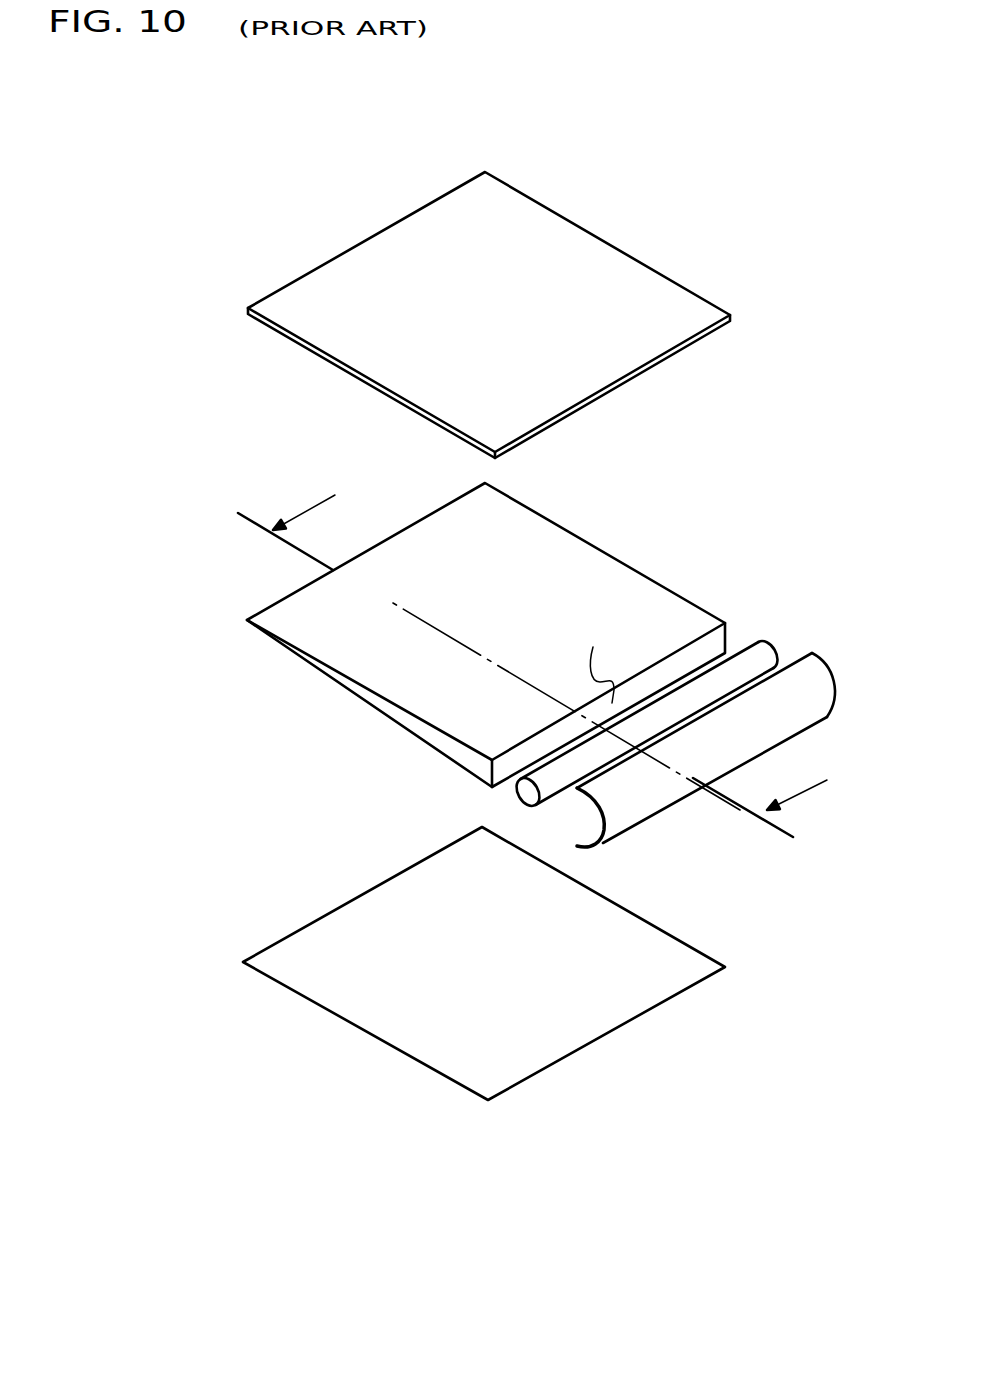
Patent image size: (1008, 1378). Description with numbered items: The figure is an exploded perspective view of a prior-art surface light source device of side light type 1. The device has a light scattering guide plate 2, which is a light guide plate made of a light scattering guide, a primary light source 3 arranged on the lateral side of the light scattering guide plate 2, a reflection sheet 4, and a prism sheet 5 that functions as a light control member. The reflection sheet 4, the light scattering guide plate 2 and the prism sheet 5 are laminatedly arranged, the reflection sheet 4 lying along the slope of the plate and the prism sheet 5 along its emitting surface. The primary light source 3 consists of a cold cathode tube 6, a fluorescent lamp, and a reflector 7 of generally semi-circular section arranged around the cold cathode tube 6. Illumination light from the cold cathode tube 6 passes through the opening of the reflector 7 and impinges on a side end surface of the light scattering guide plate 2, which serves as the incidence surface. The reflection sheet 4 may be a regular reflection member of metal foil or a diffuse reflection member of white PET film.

The surface light source device of side light type 1 is at (528, 722).
The light scattering guide plate 2 is at (287, 617).
The primary light source 3 is at (601, 709).
The reflection sheet 4 is at (532, 1068).
The prism sheet 5 is at (610, 372).
The cold cathode tube 6 is at (557, 782).
The reflector 7 is at (667, 792).